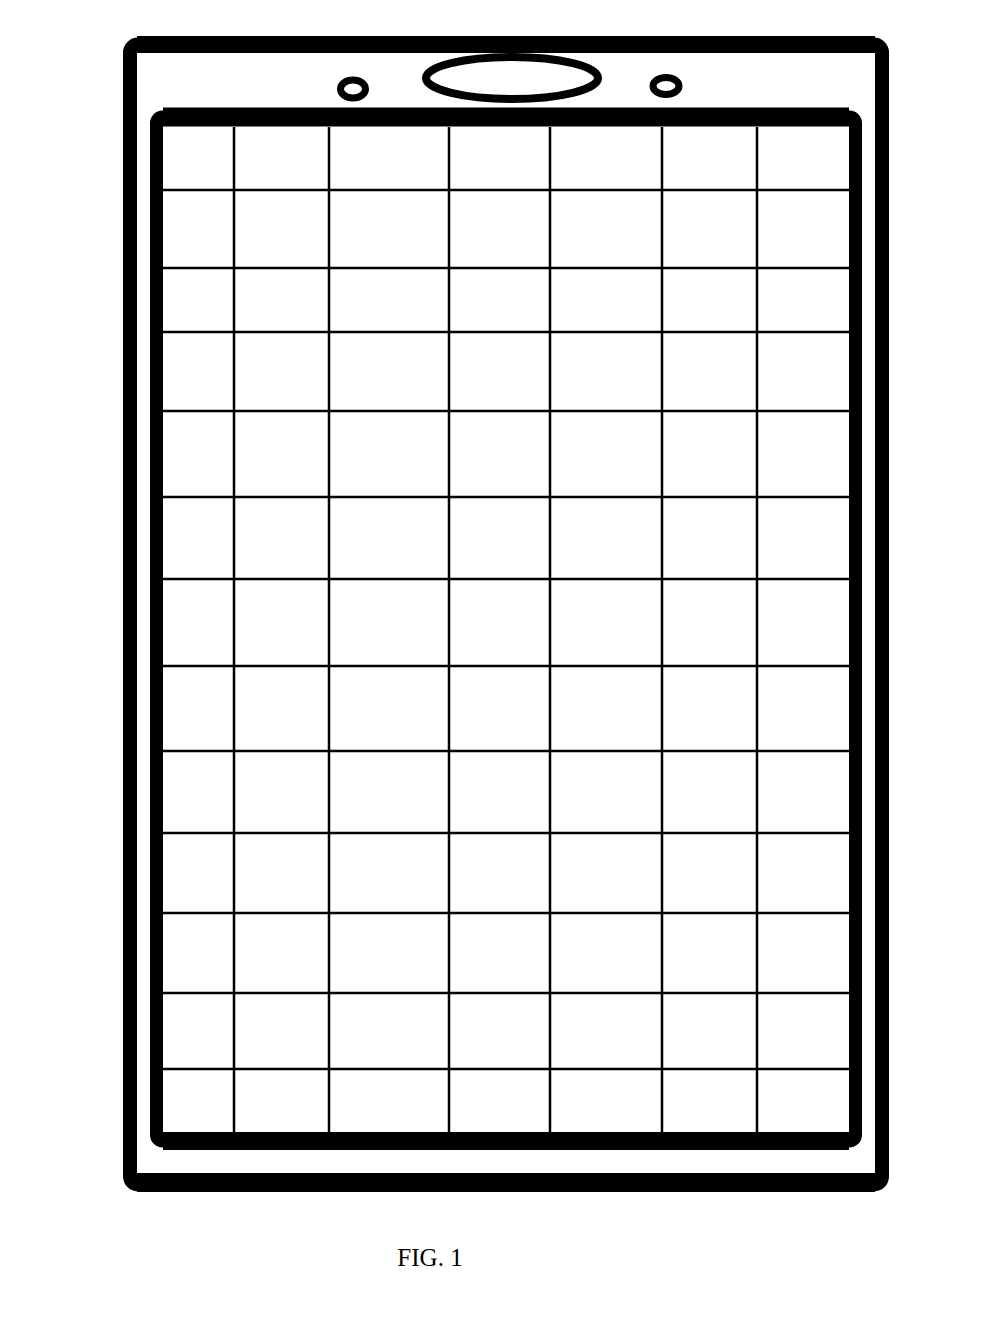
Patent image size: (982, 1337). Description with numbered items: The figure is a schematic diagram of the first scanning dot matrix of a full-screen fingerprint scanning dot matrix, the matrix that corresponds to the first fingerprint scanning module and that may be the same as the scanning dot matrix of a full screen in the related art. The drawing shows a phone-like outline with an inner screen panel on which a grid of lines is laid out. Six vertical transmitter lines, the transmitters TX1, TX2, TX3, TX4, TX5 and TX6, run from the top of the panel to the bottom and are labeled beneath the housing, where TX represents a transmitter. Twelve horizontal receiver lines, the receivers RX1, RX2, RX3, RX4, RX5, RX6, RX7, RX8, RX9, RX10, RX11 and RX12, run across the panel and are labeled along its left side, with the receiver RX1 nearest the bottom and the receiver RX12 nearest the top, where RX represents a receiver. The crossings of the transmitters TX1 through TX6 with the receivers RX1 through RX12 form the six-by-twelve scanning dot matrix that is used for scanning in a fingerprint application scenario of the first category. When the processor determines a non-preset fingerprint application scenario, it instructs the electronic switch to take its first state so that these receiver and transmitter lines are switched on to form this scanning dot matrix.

The receiver RX1 is at (448, 1078).
The receiver RX2 is at (448, 994).
The receiver RX3 is at (448, 914).
The receiver RX4 is at (448, 836).
The receiver RX5 is at (448, 758).
The receiver RX6 is at (448, 672).
The receiver RX7 is at (448, 590).
The receiver RX8 is at (448, 500).
The receiver RX9 is at (448, 412).
The receiver RX10 is at (441, 342).
The receiver RX11 is at (442, 260).
The receiver RX12 is at (441, 178).
The transmitter TX1 is at (221, 675).
The transmitter TX2 is at (336, 675).
The transmitter TX3 is at (443, 675).
The transmitter TX4 is at (553, 675).
The transmitter TX5 is at (657, 675).
The transmitter TX6 is at (752, 675).